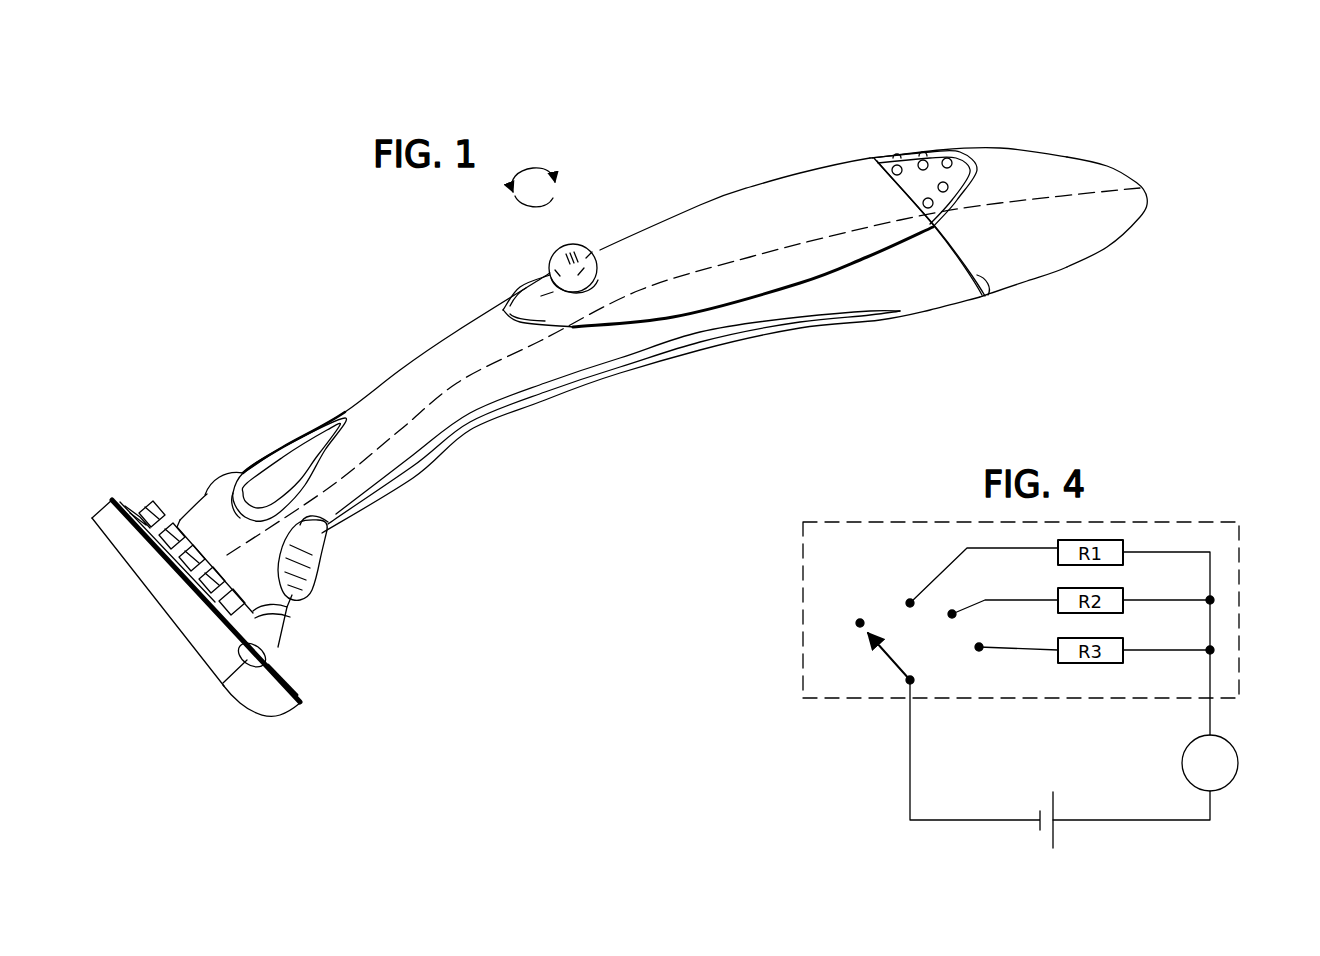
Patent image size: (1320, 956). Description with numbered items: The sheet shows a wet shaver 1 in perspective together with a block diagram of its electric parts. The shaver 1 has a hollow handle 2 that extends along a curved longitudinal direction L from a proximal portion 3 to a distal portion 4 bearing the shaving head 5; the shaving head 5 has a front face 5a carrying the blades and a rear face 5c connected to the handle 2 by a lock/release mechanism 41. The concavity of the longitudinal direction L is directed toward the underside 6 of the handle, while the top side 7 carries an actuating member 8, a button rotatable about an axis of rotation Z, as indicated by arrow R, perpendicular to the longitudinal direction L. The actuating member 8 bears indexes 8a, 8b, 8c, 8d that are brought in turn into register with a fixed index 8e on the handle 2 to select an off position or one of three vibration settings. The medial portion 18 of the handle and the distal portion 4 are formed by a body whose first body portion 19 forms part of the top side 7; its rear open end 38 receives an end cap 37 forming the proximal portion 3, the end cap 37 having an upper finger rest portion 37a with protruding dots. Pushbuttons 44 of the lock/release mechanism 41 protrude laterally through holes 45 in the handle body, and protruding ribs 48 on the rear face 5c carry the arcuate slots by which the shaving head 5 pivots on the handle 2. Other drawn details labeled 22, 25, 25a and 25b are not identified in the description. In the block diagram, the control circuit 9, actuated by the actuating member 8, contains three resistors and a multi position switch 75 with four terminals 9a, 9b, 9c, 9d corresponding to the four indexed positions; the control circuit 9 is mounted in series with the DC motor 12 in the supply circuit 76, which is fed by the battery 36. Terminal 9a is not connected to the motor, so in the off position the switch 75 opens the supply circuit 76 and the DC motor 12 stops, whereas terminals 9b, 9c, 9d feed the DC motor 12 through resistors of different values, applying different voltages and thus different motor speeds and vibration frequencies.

In FIG. 1, the wet shaver 1 is at (365, 237).
In FIG. 1, the hollow handle 2 is at (752, 185).
In FIG. 1, the proximal portion 3 is at (1137, 227).
In FIG. 1, the distal portion 4 is at (287, 606).
In FIG. 1, the shaving head 5 is at (293, 720).
In FIG. 1, the front face 5a is at (160, 622).
In FIG. 1, the rear face 5c is at (148, 505).
In FIG. 1, the underside of the handle 6 is at (515, 412).
In FIG. 1, the top side of the handle 7 is at (460, 352).
In FIG. 1, the actuating member 8 is at (557, 250).
In FIG. 1, the index (0) 8a is at (556, 272).
In FIG. 1, the index (I) 8b is at (580, 272).
In FIG. 1, the index (II) 8c is at (588, 255).
In FIG. 1, the index (III) 8d is at (568, 247).
In FIG. 1, the fixed index 8e is at (548, 292).
In FIG. 4, the control circuit 9 is at (800, 576).
In FIG. 4, the switch terminal (position 0) 9a is at (860, 623).
In FIG. 4, the switch terminal (position I) 9b is at (910, 603).
In FIG. 4, the switch terminal (position II) 9c is at (952, 614).
In FIG. 4, the switch terminal (position III) 9d is at (979, 647).
In FIG. 4, the DC motor 12 is at (1232, 778).
In FIG. 1, the medial portion of the handle 18 is at (660, 392).
In FIG. 1, the first body portion 19 is at (360, 472).
In FIG. 1, the housing section 22 is at (838, 178).
In FIG. 1, the recess 25 is at (290, 453).
In FIG. 1, the recess inner edge 25a is at (337, 417).
In FIG. 1, the recess rounded end 25b is at (240, 482).
In FIG. 4, the battery 36 is at (1063, 833).
In FIG. 1, the end cap 37 is at (1030, 160).
In FIG. 1, the upper finger rest portion 37a is at (938, 162).
In FIG. 1, the rear open end 38 is at (977, 275).
In FIG. 1, the lock/release mechanism 41 is at (165, 528).
In FIG. 1, the pushbutton 44 is at (223, 473).
In FIG. 1, the holes 45 is at (313, 528).
In FIG. 1, the protruding ribs 48 is at (277, 653).
In FIG. 4, the multi position switch 75 is at (888, 660).
In FIG. 4, the supply circuit 76 is at (1215, 823).
In FIG. 1, the longitudinal direction L is at (545, 350).
In FIG. 1, the axis of rotation Z is at (533, 187).
In FIG. 1, the arrow R is at (558, 182).